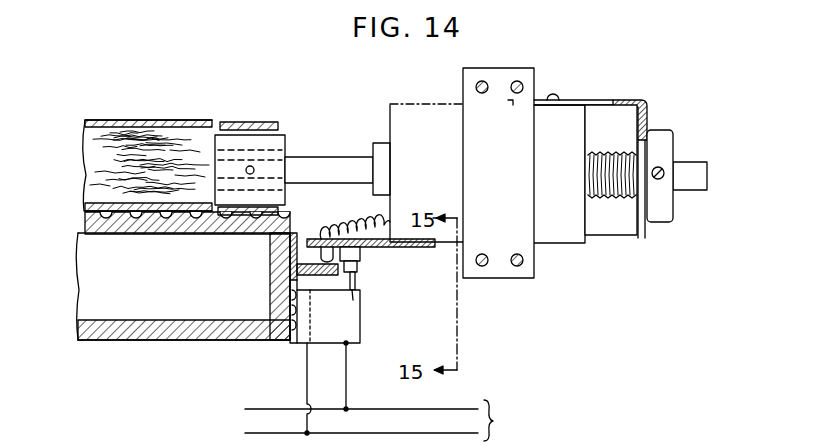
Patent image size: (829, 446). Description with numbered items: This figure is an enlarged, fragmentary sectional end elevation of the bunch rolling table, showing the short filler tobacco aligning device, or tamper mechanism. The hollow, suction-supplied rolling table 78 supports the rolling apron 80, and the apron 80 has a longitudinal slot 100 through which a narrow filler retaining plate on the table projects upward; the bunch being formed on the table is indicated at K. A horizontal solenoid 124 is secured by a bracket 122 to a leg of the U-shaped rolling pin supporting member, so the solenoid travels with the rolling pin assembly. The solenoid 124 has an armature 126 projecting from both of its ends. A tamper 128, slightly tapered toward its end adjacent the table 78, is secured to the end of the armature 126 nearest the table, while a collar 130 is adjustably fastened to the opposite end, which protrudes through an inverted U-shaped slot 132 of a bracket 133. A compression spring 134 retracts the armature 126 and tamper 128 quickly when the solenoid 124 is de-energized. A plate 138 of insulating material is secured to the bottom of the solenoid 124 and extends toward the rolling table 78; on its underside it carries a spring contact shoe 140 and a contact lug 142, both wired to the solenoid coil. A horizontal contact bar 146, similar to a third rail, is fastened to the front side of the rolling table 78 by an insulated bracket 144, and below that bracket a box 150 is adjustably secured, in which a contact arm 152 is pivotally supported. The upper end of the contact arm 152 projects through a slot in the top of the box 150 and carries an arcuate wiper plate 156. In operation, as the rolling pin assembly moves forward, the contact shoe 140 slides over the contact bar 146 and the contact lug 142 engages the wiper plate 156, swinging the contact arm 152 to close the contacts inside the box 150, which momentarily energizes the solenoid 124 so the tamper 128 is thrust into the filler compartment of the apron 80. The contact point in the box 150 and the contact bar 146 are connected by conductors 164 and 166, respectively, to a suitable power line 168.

The log / workpiece K is at (140, 136).
The rolling table 78 is at (160, 336).
The rolling apron 80 is at (86, 209).
The longitudinal slot 100 is at (215, 125).
The bracket 122 is at (512, 72).
The solenoid 124 is at (433, 104).
The armature 126 is at (306, 156).
The tamper 128 is at (280, 130).
The collar 130 is at (672, 136).
The inverted U-shaped slot 132 is at (637, 146).
The bracket 133 is at (600, 103).
The compression spring 134 is at (628, 196).
The plate 138 is at (435, 248).
The spring contact shoe 140 is at (300, 250).
The contact lug 142 is at (360, 252).
The insulated bracket 144 is at (290, 289).
The contact bar 146 is at (353, 300).
The box 150 is at (360, 334).
The contact arm 152 is at (356, 281).
The arcuate wiper plate 156 is at (357, 266).
The conductor 164 is at (350, 393).
The conductor 166 is at (306, 366).
The power line 168 is at (495, 421).